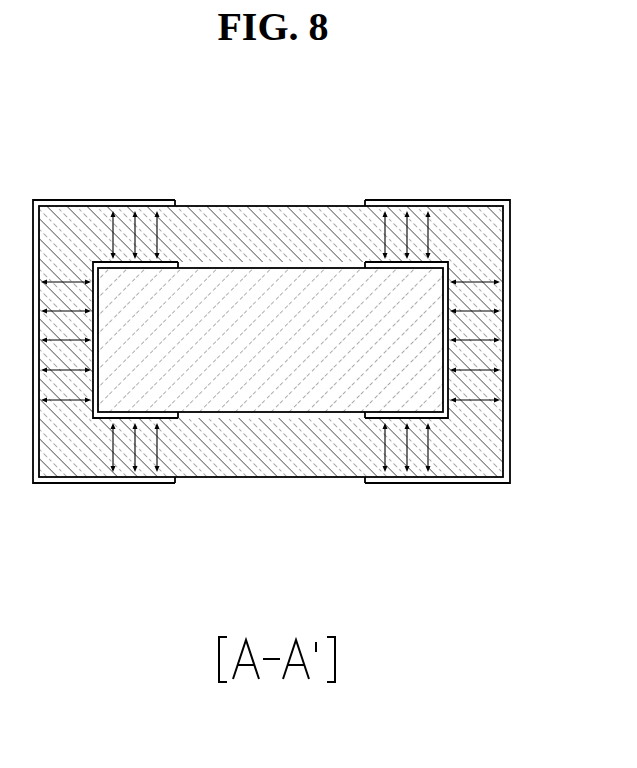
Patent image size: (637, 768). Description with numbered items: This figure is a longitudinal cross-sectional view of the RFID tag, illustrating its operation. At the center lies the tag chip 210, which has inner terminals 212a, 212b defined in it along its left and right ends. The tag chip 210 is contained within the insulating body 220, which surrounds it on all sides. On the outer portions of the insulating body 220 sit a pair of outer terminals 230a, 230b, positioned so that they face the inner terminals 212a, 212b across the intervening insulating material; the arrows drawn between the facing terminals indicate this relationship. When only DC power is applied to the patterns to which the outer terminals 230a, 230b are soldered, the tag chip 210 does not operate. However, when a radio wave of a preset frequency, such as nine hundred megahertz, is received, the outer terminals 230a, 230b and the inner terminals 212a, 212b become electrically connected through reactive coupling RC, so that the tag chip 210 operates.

The tag chip 210 is at (216, 386).
The inner terminal 212a is at (103, 262).
The inner terminal 212b is at (437, 262).
The insulating body 220 is at (284, 455).
The outer terminal 230a is at (145, 483).
The outer terminal 230b is at (460, 483).
The reactive coupling RC is at (378, 229).